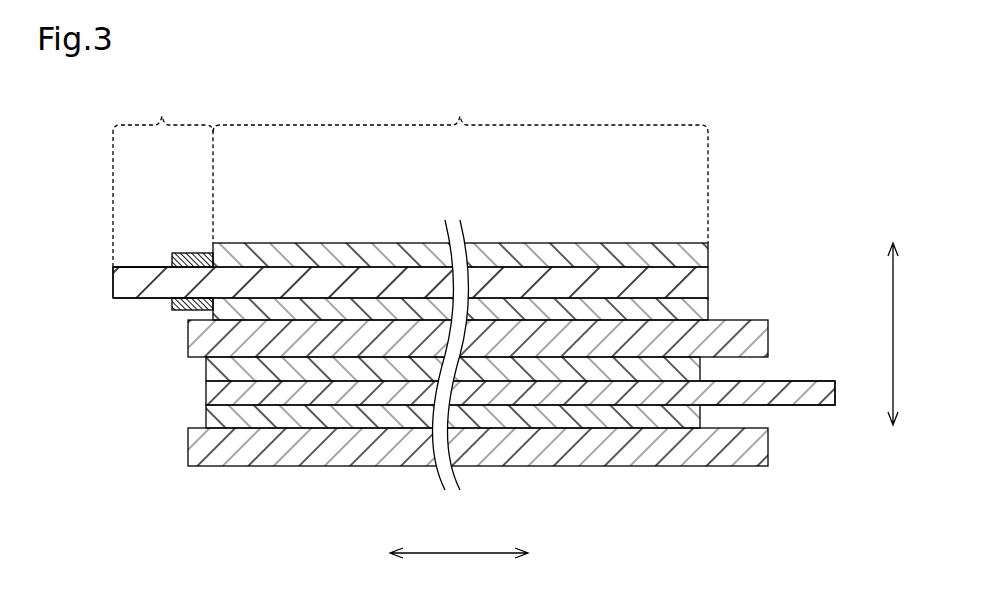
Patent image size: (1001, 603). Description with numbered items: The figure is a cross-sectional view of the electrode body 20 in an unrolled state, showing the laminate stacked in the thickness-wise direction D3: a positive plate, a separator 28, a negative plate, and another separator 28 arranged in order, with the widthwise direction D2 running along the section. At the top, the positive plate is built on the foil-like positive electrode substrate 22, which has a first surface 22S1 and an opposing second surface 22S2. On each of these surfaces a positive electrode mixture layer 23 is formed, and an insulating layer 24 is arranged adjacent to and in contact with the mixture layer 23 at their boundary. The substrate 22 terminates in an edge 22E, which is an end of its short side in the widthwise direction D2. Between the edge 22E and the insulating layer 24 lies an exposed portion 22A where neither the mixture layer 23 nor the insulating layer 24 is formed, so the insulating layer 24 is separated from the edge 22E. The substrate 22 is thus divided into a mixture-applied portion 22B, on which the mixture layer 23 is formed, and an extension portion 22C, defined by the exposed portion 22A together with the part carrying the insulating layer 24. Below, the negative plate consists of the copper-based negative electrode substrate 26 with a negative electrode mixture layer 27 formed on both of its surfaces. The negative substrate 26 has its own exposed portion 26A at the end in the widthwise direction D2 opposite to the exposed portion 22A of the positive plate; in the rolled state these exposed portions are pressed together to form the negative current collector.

The electrode body 20 is at (496, 314).
The positive electrode substrate 22 is at (710, 286).
The exposed portion 22A is at (113, 267).
The mixture-applied portion 22B is at (460, 162).
The extension portion 22C is at (163, 173).
The edge 22E is at (113, 275).
The first surface 22S1 is at (148, 266).
The second surface 22S2 is at (113, 299).
The positive electrode mixture layer 23 is at (710, 258).
The insulating layer 24 is at (192, 252).
The negative electrode substrate 26 is at (206, 394).
The exposed portion 26A is at (803, 379).
The negative electrode mixture layer 27 is at (206, 368).
The separator 28 is at (768, 343).
The widthwise direction D2 is at (459, 539).
The thickness-wise direction D3 is at (909, 334).